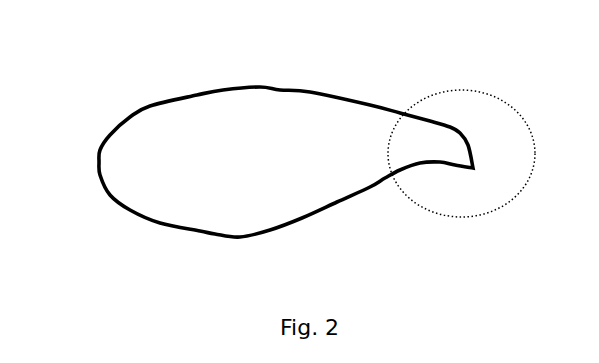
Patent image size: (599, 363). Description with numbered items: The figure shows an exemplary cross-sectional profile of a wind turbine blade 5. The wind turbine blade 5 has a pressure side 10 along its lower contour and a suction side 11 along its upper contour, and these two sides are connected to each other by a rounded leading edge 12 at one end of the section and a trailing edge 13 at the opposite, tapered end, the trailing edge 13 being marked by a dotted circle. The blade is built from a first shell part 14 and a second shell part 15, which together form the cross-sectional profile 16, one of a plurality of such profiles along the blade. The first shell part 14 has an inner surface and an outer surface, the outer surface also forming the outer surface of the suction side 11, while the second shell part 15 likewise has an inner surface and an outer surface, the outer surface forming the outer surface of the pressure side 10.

The wind turbine blade 5 is at (147, 105).
The pressure side 10 is at (215, 233).
The suction side 11 is at (224, 92).
The leading edge 12 is at (93, 162).
The trailing edge 13 is at (474, 148).
The first shell part 14 is at (310, 92).
The second shell part 15 is at (302, 218).
The cross-sectional profile 16 is at (275, 168).